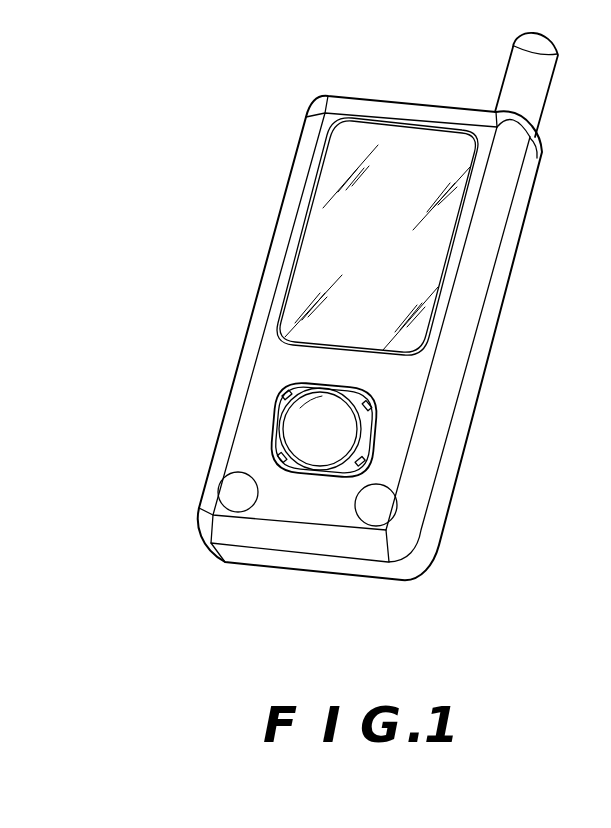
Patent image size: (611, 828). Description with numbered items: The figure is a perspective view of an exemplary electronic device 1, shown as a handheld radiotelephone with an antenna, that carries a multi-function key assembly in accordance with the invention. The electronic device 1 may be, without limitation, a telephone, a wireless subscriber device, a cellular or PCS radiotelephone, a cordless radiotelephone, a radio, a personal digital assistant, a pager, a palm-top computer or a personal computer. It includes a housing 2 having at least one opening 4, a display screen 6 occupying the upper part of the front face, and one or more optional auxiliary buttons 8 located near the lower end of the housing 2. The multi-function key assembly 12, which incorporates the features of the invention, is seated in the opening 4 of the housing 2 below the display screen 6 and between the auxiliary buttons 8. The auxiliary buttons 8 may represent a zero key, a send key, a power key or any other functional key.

The electronic device 1 is at (358, 342).
The housing 2 is at (405, 408).
The opening 4 is at (313, 478).
The display screen 6 is at (363, 252).
The auxiliary buttons 8 is at (238, 492).
The multi-function key assembly 12 is at (272, 479).